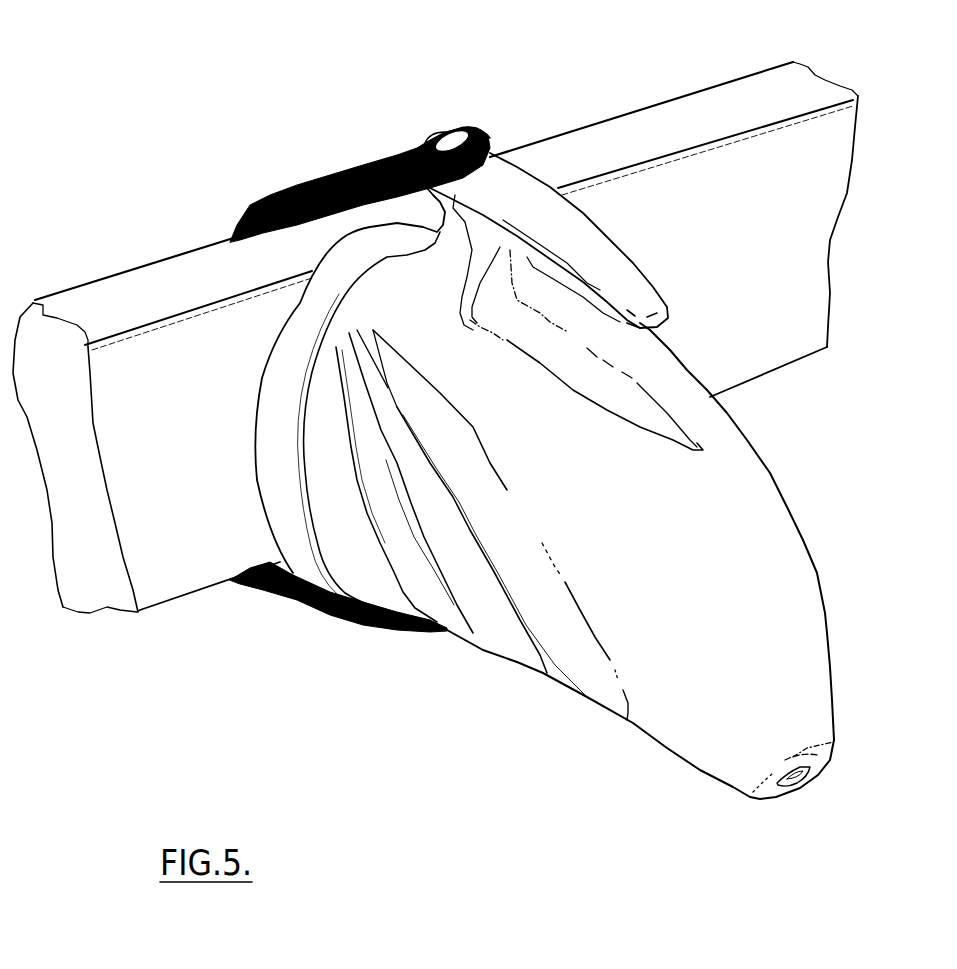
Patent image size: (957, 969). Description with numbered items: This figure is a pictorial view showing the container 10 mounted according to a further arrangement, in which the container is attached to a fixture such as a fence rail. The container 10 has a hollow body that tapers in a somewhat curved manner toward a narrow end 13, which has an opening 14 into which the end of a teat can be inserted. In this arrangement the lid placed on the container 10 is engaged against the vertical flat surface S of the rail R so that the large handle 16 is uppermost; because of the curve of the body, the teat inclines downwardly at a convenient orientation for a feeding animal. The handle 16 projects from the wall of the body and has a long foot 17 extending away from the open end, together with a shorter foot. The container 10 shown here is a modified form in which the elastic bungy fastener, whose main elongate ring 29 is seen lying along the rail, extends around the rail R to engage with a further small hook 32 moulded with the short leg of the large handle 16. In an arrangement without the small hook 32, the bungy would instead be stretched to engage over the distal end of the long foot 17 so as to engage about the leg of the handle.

The container 10 is at (790, 493).
The narrow end 13 is at (823, 715).
The opening 14 is at (805, 787).
The handle/hook 16 is at (527, 197).
The long foot 17 is at (647, 297).
The main elongate ring 29 is at (247, 213).
The small hook 32 is at (434, 143).
The rail R is at (796, 98).
The vertical flat surface S is at (808, 268).